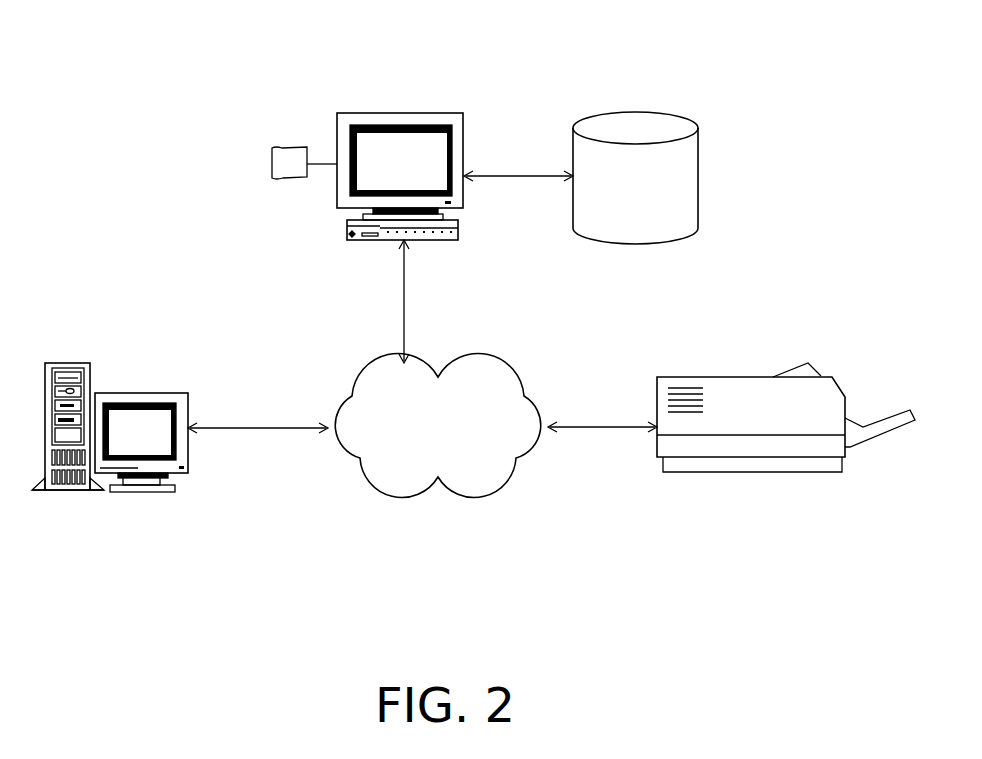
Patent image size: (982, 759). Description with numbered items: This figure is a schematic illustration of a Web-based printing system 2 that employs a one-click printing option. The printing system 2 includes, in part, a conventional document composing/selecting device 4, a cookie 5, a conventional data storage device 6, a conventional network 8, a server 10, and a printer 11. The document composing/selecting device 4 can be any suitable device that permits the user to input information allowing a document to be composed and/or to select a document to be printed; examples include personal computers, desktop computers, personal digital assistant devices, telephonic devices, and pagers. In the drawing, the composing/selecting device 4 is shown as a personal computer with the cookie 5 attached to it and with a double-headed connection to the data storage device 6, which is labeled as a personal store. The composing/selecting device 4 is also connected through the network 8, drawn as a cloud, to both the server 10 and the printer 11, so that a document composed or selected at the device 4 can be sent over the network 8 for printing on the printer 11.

The printing system 2 is at (230, 247).
The document composing/selecting device 4 is at (398, 113).
The cookie 5 is at (296, 173).
The data storage device 6 is at (668, 112).
The network 8 is at (492, 366).
The server 10 is at (127, 395).
The printer 11 is at (740, 377).